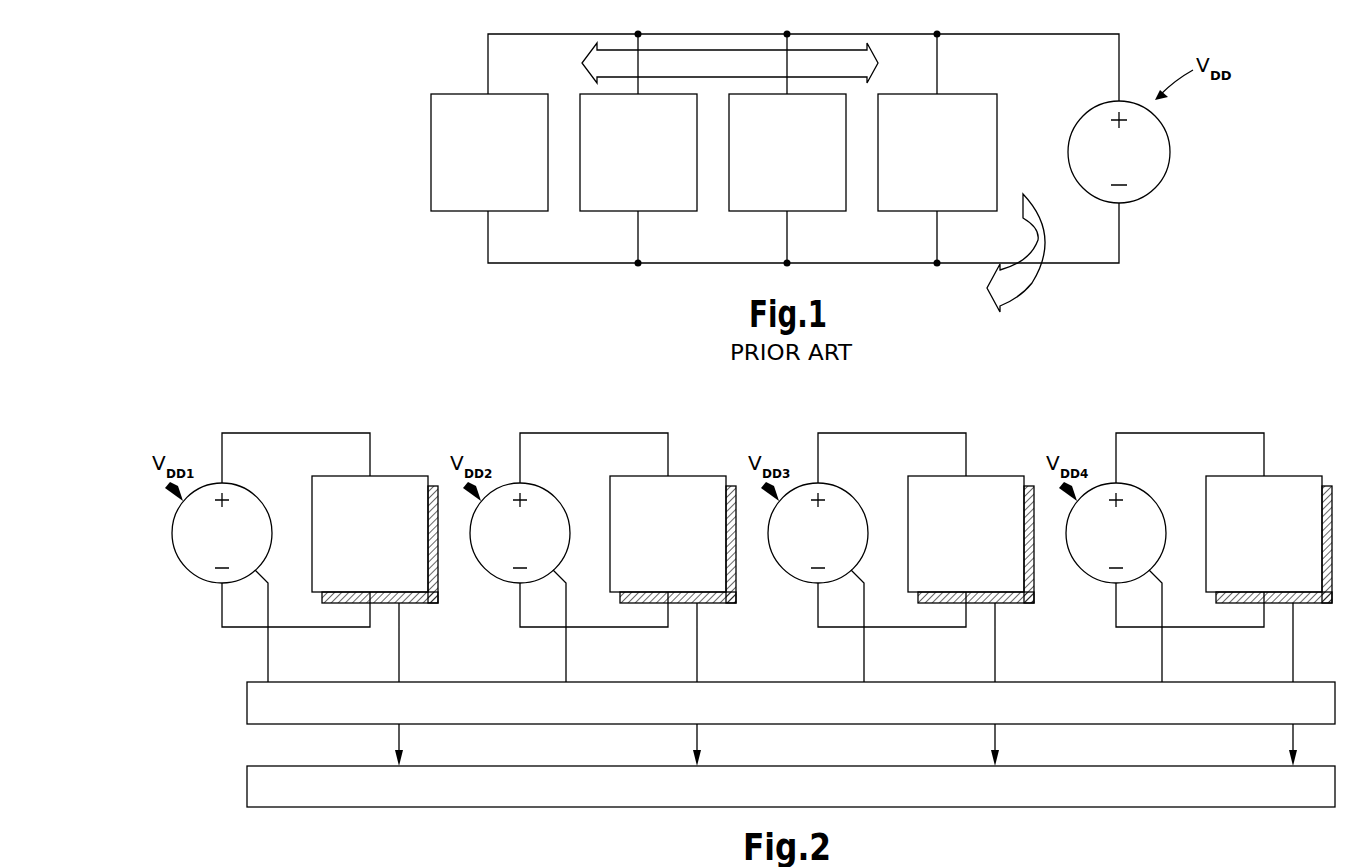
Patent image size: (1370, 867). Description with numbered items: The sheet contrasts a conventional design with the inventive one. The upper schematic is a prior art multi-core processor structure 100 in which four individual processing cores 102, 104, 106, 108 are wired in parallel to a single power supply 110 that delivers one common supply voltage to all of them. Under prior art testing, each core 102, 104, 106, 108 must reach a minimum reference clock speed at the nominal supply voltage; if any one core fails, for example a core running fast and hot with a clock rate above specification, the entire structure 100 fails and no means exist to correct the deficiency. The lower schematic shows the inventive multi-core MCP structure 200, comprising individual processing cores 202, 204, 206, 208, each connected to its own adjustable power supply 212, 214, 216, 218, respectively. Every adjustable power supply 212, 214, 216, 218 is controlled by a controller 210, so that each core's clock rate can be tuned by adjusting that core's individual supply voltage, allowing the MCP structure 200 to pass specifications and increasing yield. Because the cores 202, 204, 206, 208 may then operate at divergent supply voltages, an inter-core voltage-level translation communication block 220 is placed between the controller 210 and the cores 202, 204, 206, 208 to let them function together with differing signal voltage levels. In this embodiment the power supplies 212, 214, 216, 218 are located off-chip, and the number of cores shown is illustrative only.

In FIG. 1, the multi-core processor structure 100 is at (424, 66).
In FIG. 1, the processing core 102 is at (462, 192).
In FIG. 1, the processing core 104 is at (610, 192).
In FIG. 1, the processing core 106 is at (755, 195).
In FIG. 1, the processing core 108 is at (900, 205).
In FIG. 1, the power supply 110 is at (1145, 175).
In FIG. 2, the multi-core MCP structure 200 is at (340, 398).
In FIG. 2, the processing core 202 is at (387, 498).
In FIG. 2, the processing core 204 is at (685, 498).
In FIG. 2, the processing core 206 is at (983, 498).
In FIG. 2, the processing core 208 is at (1275, 498).
In FIG. 2, the controller 210 is at (274, 787).
In FIG. 2, the adjustable power supply 212 is at (199, 546).
In FIG. 2, the adjustable power supply 214 is at (497, 546).
In FIG. 2, the adjustable power supply 216 is at (795, 546).
In FIG. 2, the adjustable power supply 218 is at (1093, 546).
In FIG. 2, the inter-core voltage-level translation communication block 220 is at (277, 705).